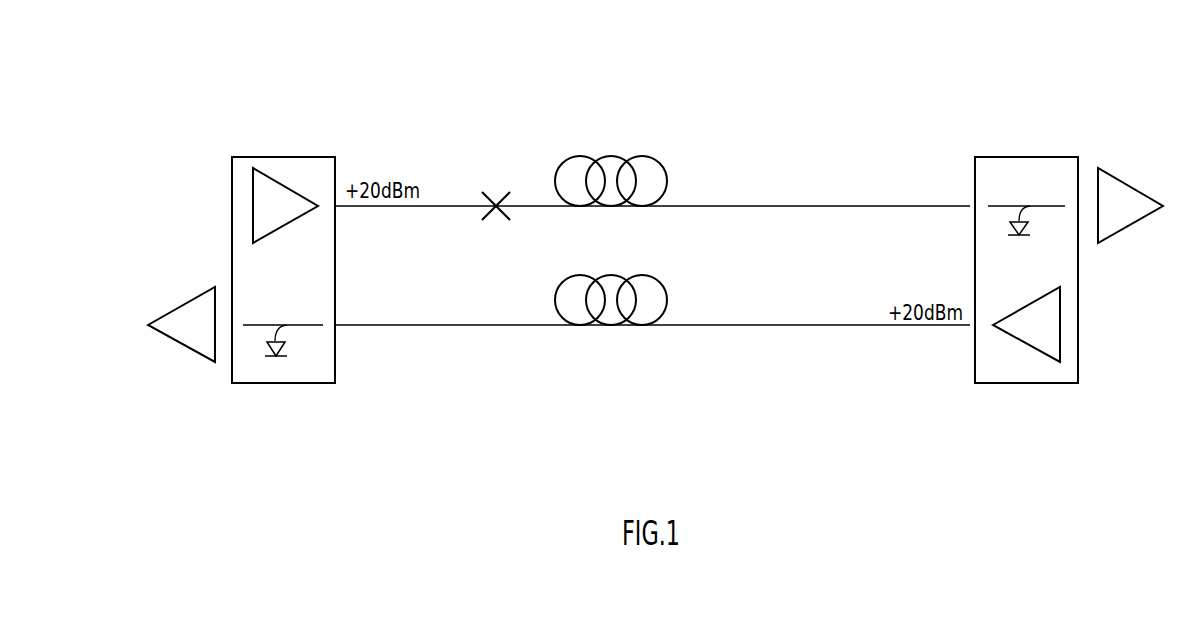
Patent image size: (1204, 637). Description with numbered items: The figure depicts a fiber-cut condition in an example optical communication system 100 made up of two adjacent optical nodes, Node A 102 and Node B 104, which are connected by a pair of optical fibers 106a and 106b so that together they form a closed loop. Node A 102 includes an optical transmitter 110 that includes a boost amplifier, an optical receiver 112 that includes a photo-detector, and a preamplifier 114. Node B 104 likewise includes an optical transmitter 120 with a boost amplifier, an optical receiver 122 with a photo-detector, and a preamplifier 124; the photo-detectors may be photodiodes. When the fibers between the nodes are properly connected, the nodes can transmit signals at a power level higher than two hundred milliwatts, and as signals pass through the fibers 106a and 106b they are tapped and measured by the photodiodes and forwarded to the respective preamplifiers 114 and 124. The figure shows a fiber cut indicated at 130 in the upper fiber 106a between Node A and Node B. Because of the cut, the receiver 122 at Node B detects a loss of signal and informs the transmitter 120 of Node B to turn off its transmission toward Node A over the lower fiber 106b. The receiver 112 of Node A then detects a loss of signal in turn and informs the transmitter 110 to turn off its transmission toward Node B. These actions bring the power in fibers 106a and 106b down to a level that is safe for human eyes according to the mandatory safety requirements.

The communication system 100 is at (67, 69).
The Node A 102 is at (276, 157).
The Node B 104 is at (1008, 157).
The optical fiber 106a is at (845, 206).
The optical fiber 106b is at (795, 325).
The optical transmitter 110 is at (253, 208).
The optical receiver 112 is at (281, 356).
The preamplifier 114 is at (176, 310).
The optical transmitter 120 is at (1060, 310).
The optical receiver 122 is at (1013, 235).
The preamplifier 124 is at (1130, 183).
The fiber cut 130 is at (503, 195).